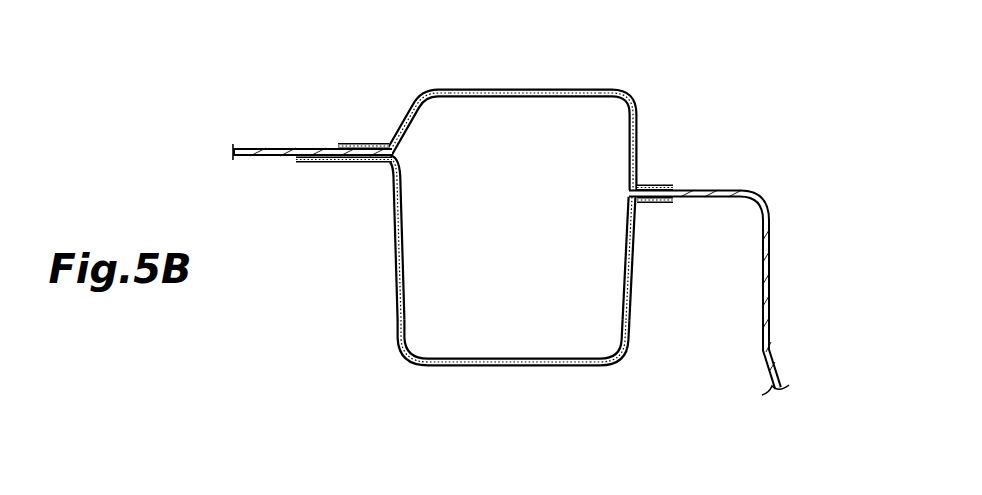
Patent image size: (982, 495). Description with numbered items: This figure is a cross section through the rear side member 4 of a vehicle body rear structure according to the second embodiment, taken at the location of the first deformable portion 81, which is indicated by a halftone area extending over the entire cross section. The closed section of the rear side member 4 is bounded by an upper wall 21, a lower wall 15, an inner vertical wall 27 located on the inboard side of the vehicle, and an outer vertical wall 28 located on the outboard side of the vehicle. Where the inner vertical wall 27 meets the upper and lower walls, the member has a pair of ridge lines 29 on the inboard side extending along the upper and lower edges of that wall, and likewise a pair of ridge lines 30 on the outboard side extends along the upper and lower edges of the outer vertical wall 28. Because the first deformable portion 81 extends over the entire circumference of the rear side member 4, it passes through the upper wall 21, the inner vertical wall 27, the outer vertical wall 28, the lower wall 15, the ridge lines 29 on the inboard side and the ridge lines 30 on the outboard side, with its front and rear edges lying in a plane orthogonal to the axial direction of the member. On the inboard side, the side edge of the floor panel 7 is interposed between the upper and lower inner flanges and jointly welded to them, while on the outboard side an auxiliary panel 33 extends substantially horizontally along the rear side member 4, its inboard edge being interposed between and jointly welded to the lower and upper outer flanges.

The rear side member 4 is at (596, 28).
The floor panel 7 is at (770, 284).
The lower wall 15 is at (527, 367).
The upper wall 21 is at (513, 90).
The inner vertical wall 27 is at (633, 282).
The outer vertical wall 28 is at (395, 257).
The ridge lines on the inboard side 29 is at (627, 93).
The ridge lines on the outboard side 30 is at (416, 90).
The auxiliary panel 33 is at (267, 149).
The first deformable portion 81 is at (473, 203).